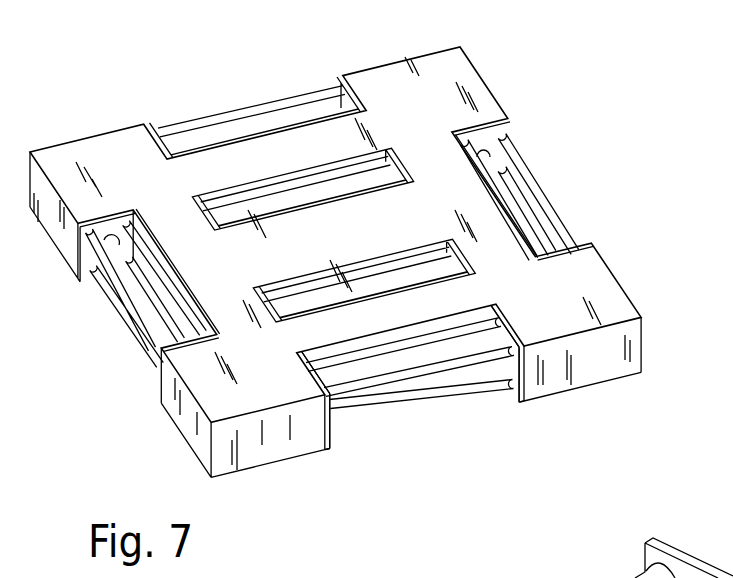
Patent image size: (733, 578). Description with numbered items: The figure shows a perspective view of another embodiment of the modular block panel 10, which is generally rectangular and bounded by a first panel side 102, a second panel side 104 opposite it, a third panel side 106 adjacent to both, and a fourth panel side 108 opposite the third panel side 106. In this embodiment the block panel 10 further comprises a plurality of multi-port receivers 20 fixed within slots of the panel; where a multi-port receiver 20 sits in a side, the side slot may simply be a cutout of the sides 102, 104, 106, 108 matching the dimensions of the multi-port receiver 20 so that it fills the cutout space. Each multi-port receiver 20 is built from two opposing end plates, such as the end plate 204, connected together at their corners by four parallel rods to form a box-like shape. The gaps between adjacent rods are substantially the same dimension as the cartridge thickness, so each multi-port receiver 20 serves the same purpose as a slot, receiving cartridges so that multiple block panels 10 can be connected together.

The modular block panel 10 is at (458, 66).
The multi-port receiver 20 is at (273, 106).
The first panel side 102 is at (620, 275).
The second panel side 104 is at (185, 420).
The third panel side 106 is at (588, 365).
The fourth panel side 108 is at (383, 56).
The end plate 204 is at (680, 556).